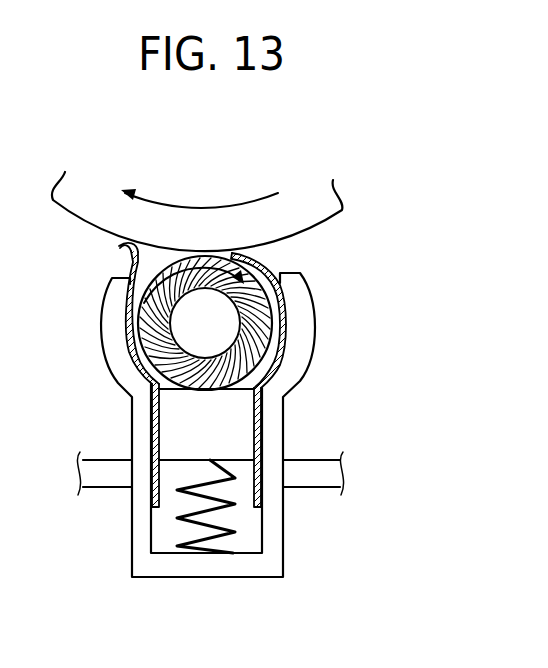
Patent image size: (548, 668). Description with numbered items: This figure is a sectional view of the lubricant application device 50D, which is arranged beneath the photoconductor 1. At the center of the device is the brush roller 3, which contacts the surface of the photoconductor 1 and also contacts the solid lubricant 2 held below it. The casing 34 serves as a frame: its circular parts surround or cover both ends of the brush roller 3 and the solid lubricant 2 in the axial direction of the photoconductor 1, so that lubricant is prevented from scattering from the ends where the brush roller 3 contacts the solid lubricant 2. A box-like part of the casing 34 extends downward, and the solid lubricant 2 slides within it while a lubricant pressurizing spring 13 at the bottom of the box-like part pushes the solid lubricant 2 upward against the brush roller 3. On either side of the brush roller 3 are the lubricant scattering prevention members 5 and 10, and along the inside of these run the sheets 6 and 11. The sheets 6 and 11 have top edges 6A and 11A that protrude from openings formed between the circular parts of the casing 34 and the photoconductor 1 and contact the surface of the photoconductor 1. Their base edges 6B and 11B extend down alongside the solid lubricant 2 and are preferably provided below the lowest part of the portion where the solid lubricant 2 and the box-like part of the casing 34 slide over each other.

The photoconductor 1 is at (214, 183).
The lubricant application device 50D is at (410, 175).
The brush roller 3 is at (204, 253).
The sheet 6 is at (125, 308).
The top edge 6A is at (129, 250).
The base edge 6B is at (152, 495).
The sheet 11 is at (287, 340).
The top edge 11A is at (272, 264).
The base edge 11B is at (258, 415).
The lubricant scattering prevention member 5 is at (110, 353).
The lubricant scattering prevention member 10 is at (308, 308).
The solid lubricant 2 is at (165, 418).
The casing 34 is at (278, 550).
The lubricant pressurizing spring 13 is at (178, 540).